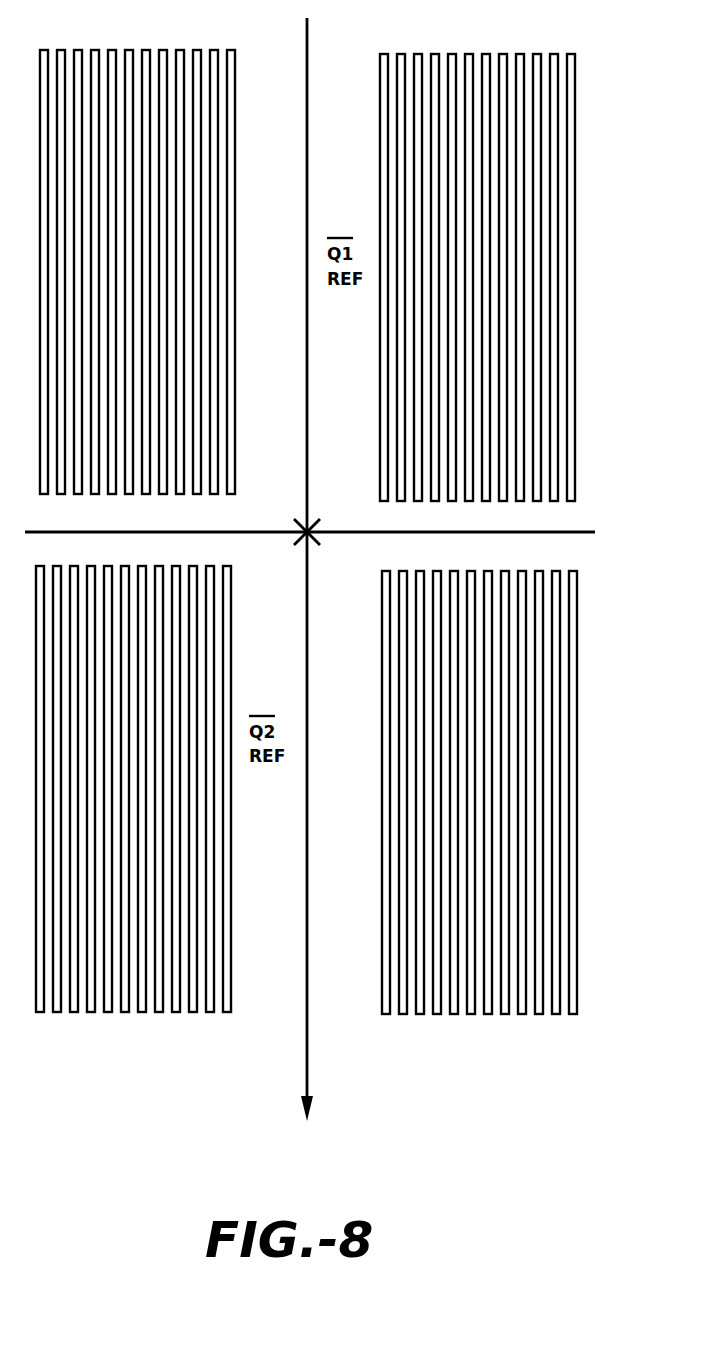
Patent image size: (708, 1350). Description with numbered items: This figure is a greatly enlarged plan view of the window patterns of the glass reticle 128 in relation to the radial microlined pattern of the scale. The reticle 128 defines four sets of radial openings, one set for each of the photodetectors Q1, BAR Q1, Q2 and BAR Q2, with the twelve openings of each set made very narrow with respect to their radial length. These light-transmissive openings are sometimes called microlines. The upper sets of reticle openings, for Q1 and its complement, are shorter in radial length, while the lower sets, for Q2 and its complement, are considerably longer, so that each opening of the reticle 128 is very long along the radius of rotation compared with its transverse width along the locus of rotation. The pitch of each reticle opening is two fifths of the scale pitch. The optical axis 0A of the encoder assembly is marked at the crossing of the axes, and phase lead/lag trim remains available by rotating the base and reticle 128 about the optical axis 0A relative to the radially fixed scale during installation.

The glass reticle 128 is at (323, 605).
The photodetector Q1 is at (165, 272).
The photodetector Q2 is at (451, 792).
The optical axis 0A is at (310, 529).